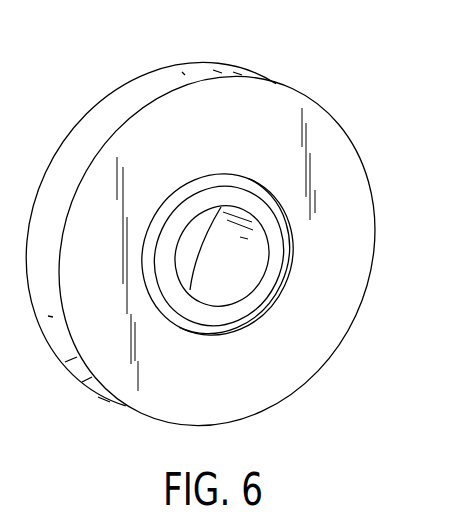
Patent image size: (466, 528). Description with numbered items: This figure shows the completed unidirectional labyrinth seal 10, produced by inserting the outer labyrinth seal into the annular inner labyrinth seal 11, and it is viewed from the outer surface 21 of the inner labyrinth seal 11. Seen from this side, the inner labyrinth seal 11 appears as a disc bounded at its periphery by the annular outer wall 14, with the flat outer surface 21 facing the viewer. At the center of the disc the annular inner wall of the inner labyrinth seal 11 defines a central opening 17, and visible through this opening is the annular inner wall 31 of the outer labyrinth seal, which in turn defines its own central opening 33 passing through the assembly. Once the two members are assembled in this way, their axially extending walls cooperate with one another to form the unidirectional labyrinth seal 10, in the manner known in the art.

The unidirectional labyrinth seal 10 is at (215, 244).
The inner labyrinth seal 11 is at (300, 90).
The annular outer wall 14 is at (135, 97).
The central opening 17 is at (262, 194).
The outer surface 21 is at (172, 396).
The annular inner wall 31 is at (261, 301).
The central opening 33 is at (203, 246).